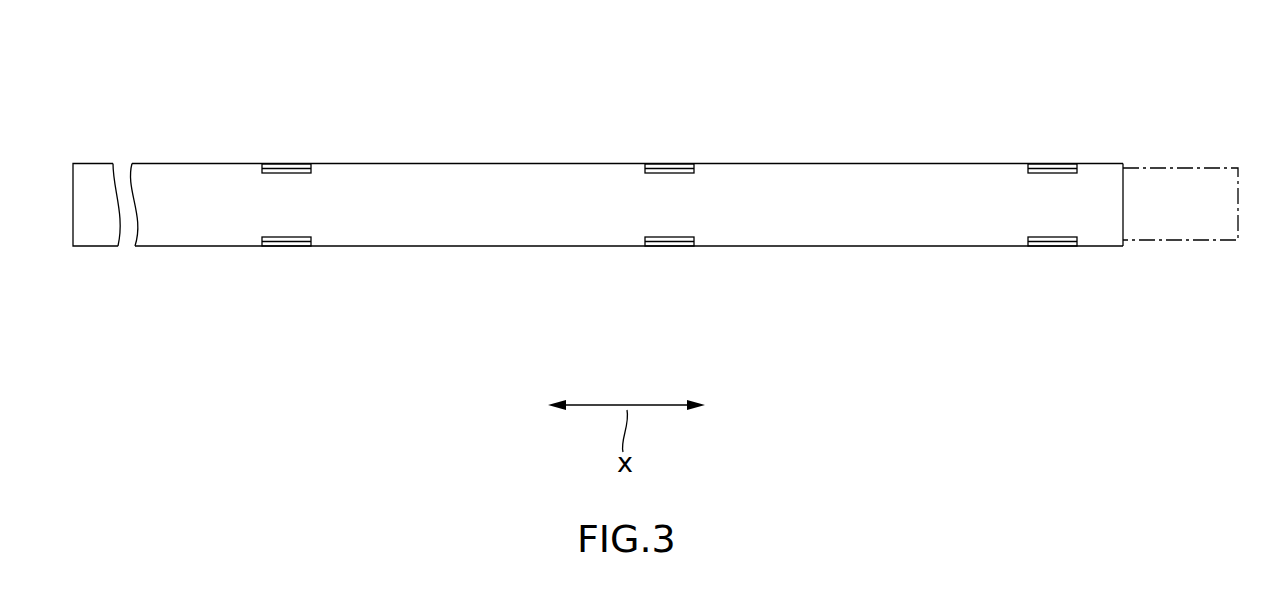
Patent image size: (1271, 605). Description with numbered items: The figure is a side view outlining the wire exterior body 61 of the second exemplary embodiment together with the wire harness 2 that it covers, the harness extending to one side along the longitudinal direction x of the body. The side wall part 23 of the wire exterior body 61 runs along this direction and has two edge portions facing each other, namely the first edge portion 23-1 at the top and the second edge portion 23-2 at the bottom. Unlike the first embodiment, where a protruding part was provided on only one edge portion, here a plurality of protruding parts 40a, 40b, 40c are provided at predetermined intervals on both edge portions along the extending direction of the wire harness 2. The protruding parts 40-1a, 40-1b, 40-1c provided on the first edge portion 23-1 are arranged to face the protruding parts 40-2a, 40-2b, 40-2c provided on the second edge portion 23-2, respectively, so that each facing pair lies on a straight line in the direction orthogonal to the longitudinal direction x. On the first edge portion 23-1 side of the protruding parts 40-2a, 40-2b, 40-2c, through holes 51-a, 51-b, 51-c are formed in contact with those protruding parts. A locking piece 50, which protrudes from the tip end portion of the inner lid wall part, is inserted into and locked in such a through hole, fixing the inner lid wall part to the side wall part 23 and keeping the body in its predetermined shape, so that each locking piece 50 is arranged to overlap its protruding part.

The wire exterior body 61 is at (874, 104).
The wire harness 2 is at (1229, 158).
The side wall part 23 is at (897, 210).
The first edge portion 23-1 is at (980, 163).
The second edge portion 23-2 is at (980, 246).
The protruding part 40a is at (1111, 207).
The protruding part 40b is at (728, 207).
The protruding part 40c is at (343, 207).
The protruding part 40-1a is at (1056, 168).
The protruding part 40-1b is at (673, 168).
The protruding part 40-1c is at (290, 168).
The protruding part 40-2a is at (1056, 240).
The protruding part 40-2b is at (673, 240).
The protruding part 40-2c is at (290, 240).
The locking piece 50 is at (292, 173).
The through hole 51-a is at (1061, 236).
The through hole 51-b is at (676, 236).
The through hole 51-c is at (293, 236).